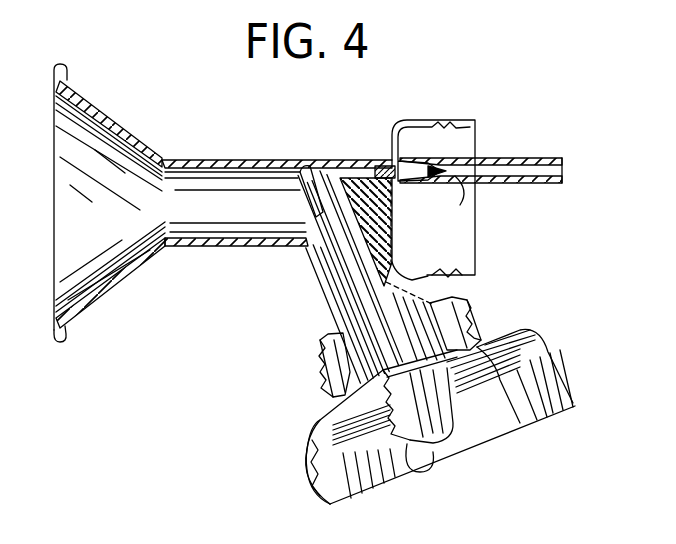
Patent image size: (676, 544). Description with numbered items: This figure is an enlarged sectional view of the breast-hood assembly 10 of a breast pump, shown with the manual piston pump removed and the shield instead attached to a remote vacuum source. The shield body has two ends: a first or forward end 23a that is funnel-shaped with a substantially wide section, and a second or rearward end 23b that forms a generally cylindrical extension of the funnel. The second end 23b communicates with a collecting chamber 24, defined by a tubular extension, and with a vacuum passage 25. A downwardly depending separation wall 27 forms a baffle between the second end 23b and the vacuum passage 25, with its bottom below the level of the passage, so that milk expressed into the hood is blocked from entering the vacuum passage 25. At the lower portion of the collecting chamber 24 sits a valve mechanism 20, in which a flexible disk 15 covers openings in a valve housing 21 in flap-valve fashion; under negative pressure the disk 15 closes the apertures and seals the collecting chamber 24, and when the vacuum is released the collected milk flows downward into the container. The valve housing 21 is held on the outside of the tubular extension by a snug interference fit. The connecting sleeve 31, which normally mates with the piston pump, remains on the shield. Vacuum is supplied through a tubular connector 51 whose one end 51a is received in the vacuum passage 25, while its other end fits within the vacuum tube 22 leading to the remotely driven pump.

The hood assembly 10 is at (238, 143).
The flexible disk 15 is at (412, 462).
The valve mechanism 20 is at (455, 445).
The valve housing 21 is at (510, 375).
The vacuum tube 22 is at (530, 158).
The first or forward end 23a is at (107, 112).
The second or rearward end 23b is at (200, 250).
The collecting chamber 24 is at (353, 280).
The vacuum passage 25 is at (330, 170).
The separation wall 27 is at (307, 193).
The connecting sleeve 31 is at (455, 120).
The tubular connector 51 is at (463, 183).
The end of tubular connector 51a is at (380, 165).